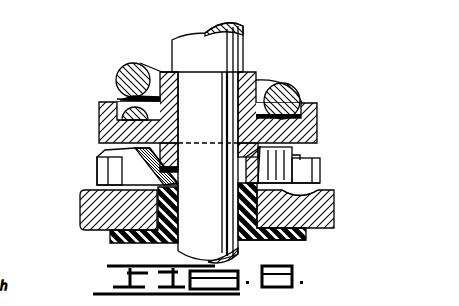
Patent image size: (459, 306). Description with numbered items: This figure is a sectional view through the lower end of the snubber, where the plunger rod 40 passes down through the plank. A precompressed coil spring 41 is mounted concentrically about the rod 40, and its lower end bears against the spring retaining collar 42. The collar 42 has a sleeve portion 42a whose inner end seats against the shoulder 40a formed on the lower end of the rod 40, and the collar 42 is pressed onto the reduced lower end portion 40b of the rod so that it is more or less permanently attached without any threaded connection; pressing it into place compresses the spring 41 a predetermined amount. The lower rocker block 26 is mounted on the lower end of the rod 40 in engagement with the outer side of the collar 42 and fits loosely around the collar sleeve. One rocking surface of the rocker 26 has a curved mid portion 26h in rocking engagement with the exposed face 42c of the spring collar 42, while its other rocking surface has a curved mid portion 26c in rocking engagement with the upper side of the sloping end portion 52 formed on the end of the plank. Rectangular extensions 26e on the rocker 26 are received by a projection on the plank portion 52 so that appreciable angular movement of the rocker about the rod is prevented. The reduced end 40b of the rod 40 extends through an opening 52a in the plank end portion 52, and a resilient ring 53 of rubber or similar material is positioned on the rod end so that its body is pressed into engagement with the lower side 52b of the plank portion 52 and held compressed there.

The plunger rod 40 is at (175, 143).
The shoulder 40a is at (214, 62).
The reduced lower end portion 40b is at (216, 186).
The coil spring 41 is at (118, 76).
The spring retaining collar 42 is at (321, 112).
The sleeve portion 42a is at (256, 77).
The exposed face 42c is at (120, 148).
The lower rocker block 26 is at (303, 152).
The curved mid portion 26c is at (333, 192).
The rectangular extensions 26e is at (100, 172).
The curved mid portion 26h is at (205, 135).
The sloping end portion 52 is at (319, 208).
The opening 52a is at (80, 208).
The lower side 52b is at (97, 236).
The resilient ring 53 is at (304, 243).